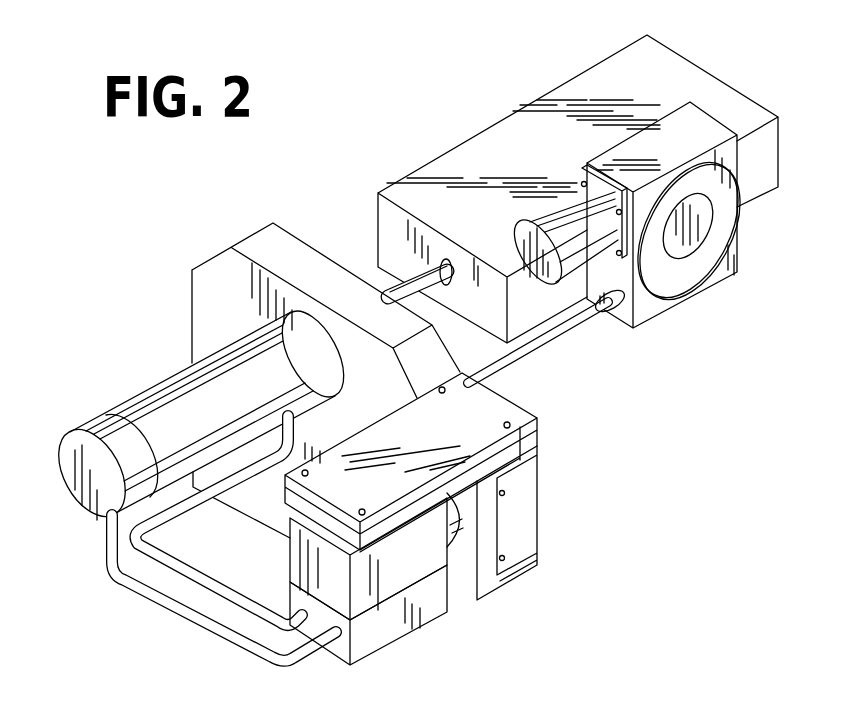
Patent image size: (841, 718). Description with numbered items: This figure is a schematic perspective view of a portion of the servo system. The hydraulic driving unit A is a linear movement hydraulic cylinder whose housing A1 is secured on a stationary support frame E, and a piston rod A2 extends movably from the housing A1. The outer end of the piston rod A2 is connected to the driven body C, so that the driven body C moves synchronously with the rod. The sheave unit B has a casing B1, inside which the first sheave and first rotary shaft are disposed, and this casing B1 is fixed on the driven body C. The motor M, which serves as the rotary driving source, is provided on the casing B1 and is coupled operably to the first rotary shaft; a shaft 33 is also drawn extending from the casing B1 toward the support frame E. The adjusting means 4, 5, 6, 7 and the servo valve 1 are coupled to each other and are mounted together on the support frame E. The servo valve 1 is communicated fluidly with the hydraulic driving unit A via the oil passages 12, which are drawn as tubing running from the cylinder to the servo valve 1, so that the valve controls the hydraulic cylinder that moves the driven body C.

The driven body C is at (600, 62).
The sheave unit B is at (726, 282).
The casing B1 is at (688, 300).
The motor M is at (558, 208).
The piston rod A2 is at (380, 291).
The drive shaft 33 is at (580, 328).
The stationary support frame E is at (255, 232).
The hydraulic driving unit A is at (192, 414).
The housing A1 is at (115, 442).
The oil passages 12 is at (182, 602).
The adjusting means 4 is at (541, 450).
The adjusting means 5 is at (368, 592).
The adjusting means 6 is at (507, 523).
The adjusting means 7 is at (455, 520).
The servo valve 1 is at (365, 600).